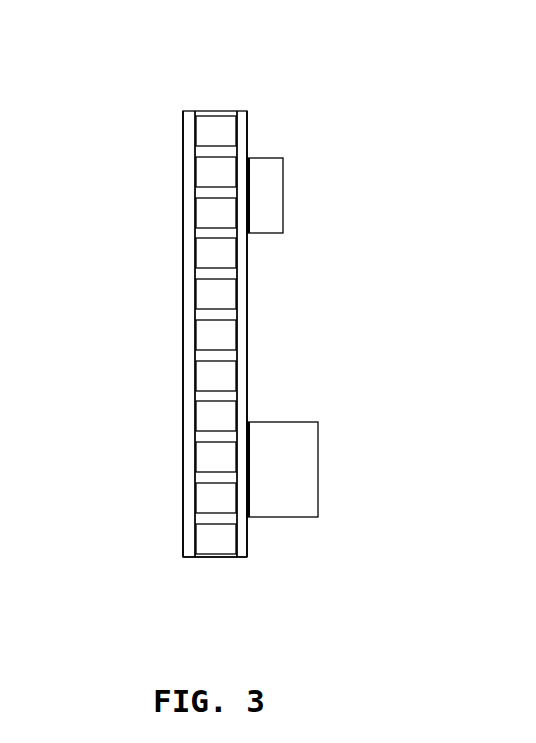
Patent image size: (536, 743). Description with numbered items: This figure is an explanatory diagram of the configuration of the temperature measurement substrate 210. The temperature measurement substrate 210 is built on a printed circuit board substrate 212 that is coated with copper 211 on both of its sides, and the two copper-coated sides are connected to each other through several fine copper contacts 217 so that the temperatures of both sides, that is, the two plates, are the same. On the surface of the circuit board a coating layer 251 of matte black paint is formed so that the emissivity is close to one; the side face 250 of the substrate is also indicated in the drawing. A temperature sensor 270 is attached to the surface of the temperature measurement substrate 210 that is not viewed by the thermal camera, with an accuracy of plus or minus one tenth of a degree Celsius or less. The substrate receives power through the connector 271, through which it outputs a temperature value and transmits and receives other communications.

The temperature measurement substrate 210 is at (183, 330).
The copper 211 is at (191, 121).
The printed circuit board substrate 212 is at (222, 540).
The fine copper contacts 217 is at (218, 153).
The left side face of rail 250 is at (185, 378).
The coating layer 251 is at (248, 355).
The temperature sensor 270 is at (267, 192).
The connector 271 is at (310, 465).